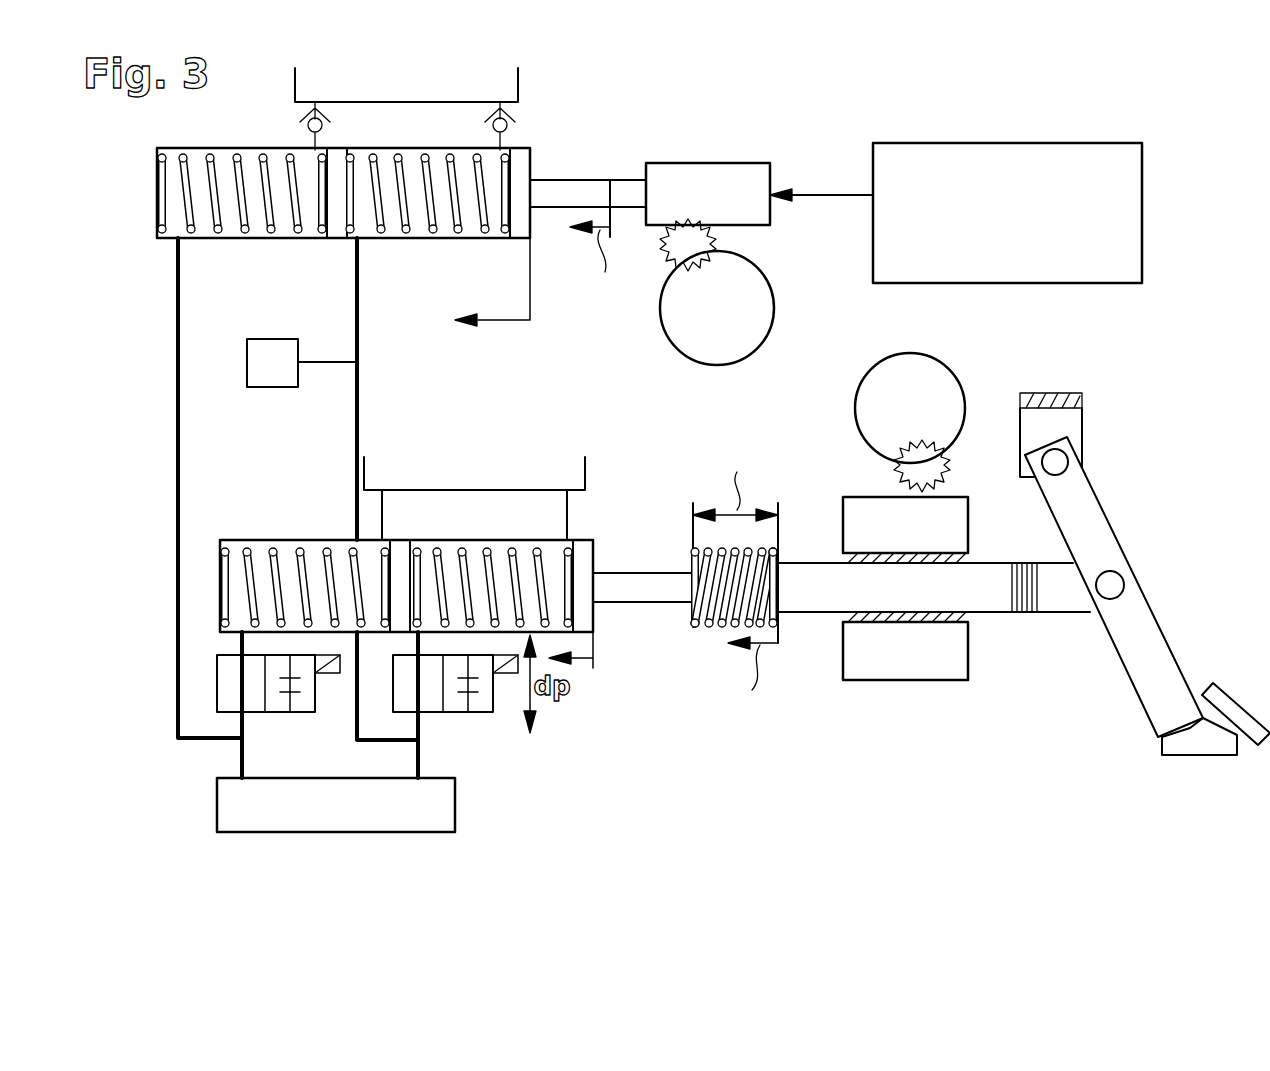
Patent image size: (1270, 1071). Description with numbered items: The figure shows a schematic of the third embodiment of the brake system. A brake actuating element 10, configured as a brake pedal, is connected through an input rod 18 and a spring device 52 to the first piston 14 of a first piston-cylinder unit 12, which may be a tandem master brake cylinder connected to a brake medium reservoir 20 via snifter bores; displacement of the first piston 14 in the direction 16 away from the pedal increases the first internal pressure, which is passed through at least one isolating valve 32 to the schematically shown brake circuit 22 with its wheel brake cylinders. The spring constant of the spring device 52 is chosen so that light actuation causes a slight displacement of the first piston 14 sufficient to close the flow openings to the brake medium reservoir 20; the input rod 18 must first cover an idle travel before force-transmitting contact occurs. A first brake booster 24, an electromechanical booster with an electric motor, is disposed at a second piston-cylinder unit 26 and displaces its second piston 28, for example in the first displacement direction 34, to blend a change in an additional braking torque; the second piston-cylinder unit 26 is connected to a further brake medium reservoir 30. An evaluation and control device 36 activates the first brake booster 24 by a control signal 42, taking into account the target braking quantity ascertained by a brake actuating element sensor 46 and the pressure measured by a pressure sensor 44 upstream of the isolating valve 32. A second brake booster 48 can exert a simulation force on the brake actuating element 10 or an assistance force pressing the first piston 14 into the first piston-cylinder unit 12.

The brake actuating element 10 is at (1140, 626).
The first piston-cylinder unit 12 is at (316, 550).
The first piston 14 is at (647, 590).
The direction 16 is at (583, 662).
The input rod 18 is at (810, 600).
The brake medium reservoir 20 is at (585, 466).
The brake circuit 22 is at (440, 821).
The first brake booster 24 is at (703, 178).
The second piston-cylinder unit 26 is at (397, 238).
The second piston 28 is at (557, 188).
The further brake medium reservoir 30 is at (518, 72).
The isolating valve 32 is at (303, 712).
The first displacement direction 34 is at (500, 322).
The evaluation and control device 36 is at (1120, 212).
The control signal 42 is at (843, 195).
The pressure sensor 44 is at (257, 378).
The brake actuating element sensor 46 is at (1023, 600).
The second brake booster 48 is at (935, 690).
The spring device 52 is at (713, 628).